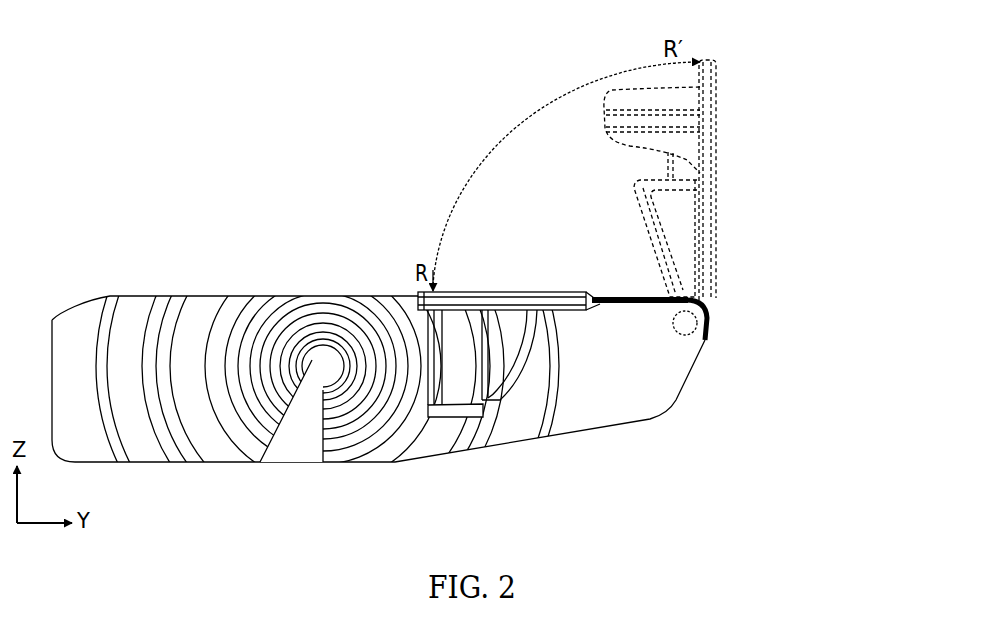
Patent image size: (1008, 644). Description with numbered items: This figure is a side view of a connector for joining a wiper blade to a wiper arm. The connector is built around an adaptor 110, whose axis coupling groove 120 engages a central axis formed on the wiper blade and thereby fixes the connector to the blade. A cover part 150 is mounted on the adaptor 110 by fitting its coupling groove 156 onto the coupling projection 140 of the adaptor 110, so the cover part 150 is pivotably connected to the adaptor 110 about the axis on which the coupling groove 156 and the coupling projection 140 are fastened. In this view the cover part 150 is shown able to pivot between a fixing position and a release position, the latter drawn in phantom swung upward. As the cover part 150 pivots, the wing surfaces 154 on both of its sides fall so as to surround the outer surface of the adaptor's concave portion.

The adaptor 110 is at (163, 292).
The axis coupling groove 120 is at (323, 368).
The cover part 150 is at (555, 290).
The wing surfaces 154 is at (498, 377).
The coupling projection 140 is at (746, 320).
The coupling groove 156 is at (685, 323).